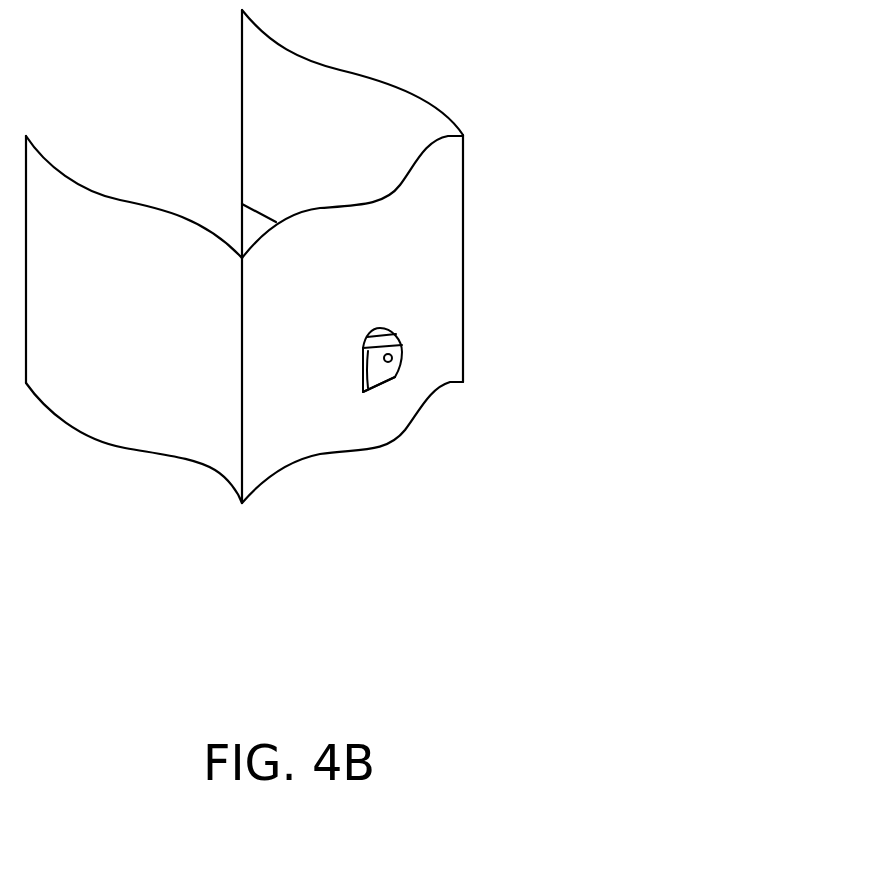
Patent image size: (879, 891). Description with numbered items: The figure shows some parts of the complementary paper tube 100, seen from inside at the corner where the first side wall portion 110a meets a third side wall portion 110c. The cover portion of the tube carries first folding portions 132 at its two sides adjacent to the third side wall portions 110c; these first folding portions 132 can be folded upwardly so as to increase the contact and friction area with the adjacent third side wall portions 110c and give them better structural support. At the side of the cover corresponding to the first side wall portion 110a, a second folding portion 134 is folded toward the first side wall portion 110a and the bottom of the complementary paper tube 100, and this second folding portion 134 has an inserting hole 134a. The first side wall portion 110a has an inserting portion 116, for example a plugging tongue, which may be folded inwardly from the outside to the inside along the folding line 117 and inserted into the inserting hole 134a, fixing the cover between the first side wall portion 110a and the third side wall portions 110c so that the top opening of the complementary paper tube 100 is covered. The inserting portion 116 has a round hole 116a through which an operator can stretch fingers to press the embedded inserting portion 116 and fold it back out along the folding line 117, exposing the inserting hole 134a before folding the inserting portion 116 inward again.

The complementary paper tube 100 is at (503, 198).
The first side wall portion 110a is at (440, 245).
The third side wall portion 110c is at (115, 408).
The first folding portion 132 is at (252, 222).
The second folding portion 134 is at (390, 332).
The inserting hole 134a is at (395, 336).
The inserting portion 116 is at (380, 383).
The round hole 116a is at (394, 358).
The folding line 117 is at (390, 383).